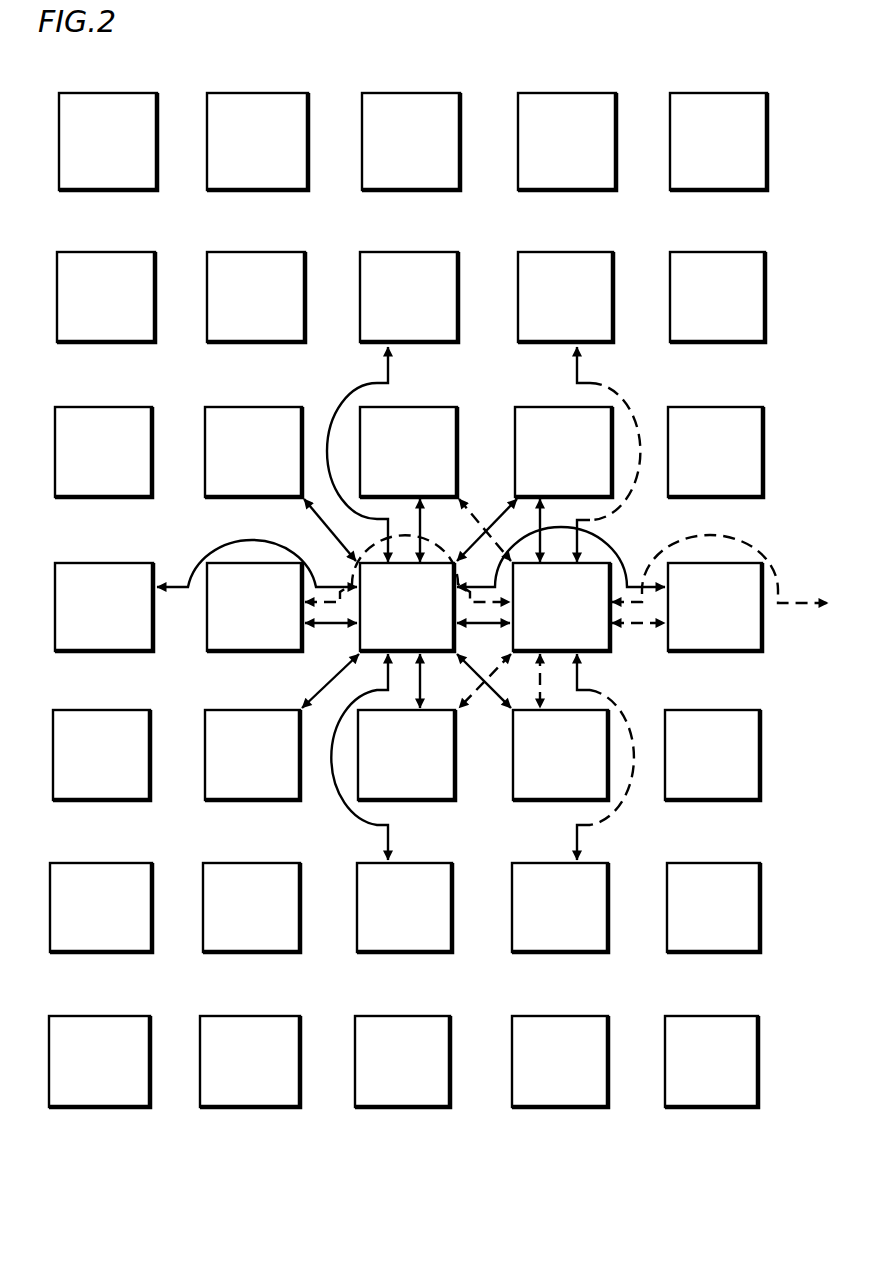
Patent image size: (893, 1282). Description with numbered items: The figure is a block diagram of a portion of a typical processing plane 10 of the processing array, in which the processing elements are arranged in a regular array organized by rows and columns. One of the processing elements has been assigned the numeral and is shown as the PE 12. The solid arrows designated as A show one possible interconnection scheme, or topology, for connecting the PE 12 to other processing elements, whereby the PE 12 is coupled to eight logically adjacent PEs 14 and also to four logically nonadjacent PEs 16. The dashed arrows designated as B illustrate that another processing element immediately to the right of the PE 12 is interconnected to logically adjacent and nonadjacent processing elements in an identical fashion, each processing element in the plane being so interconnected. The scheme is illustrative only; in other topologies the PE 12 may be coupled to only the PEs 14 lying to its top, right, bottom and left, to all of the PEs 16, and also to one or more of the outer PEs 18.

The processing plane 10 is at (329, 1121).
The processing element 12 is at (407, 607).
The logically adjacent processing elements 14 is at (408, 603).
The logically nonadjacent processing elements 16 is at (407, 602).
The processing elements 18 is at (408, 600).
The solid arrows A is at (394, 378).
The dashed arrows B is at (592, 379).